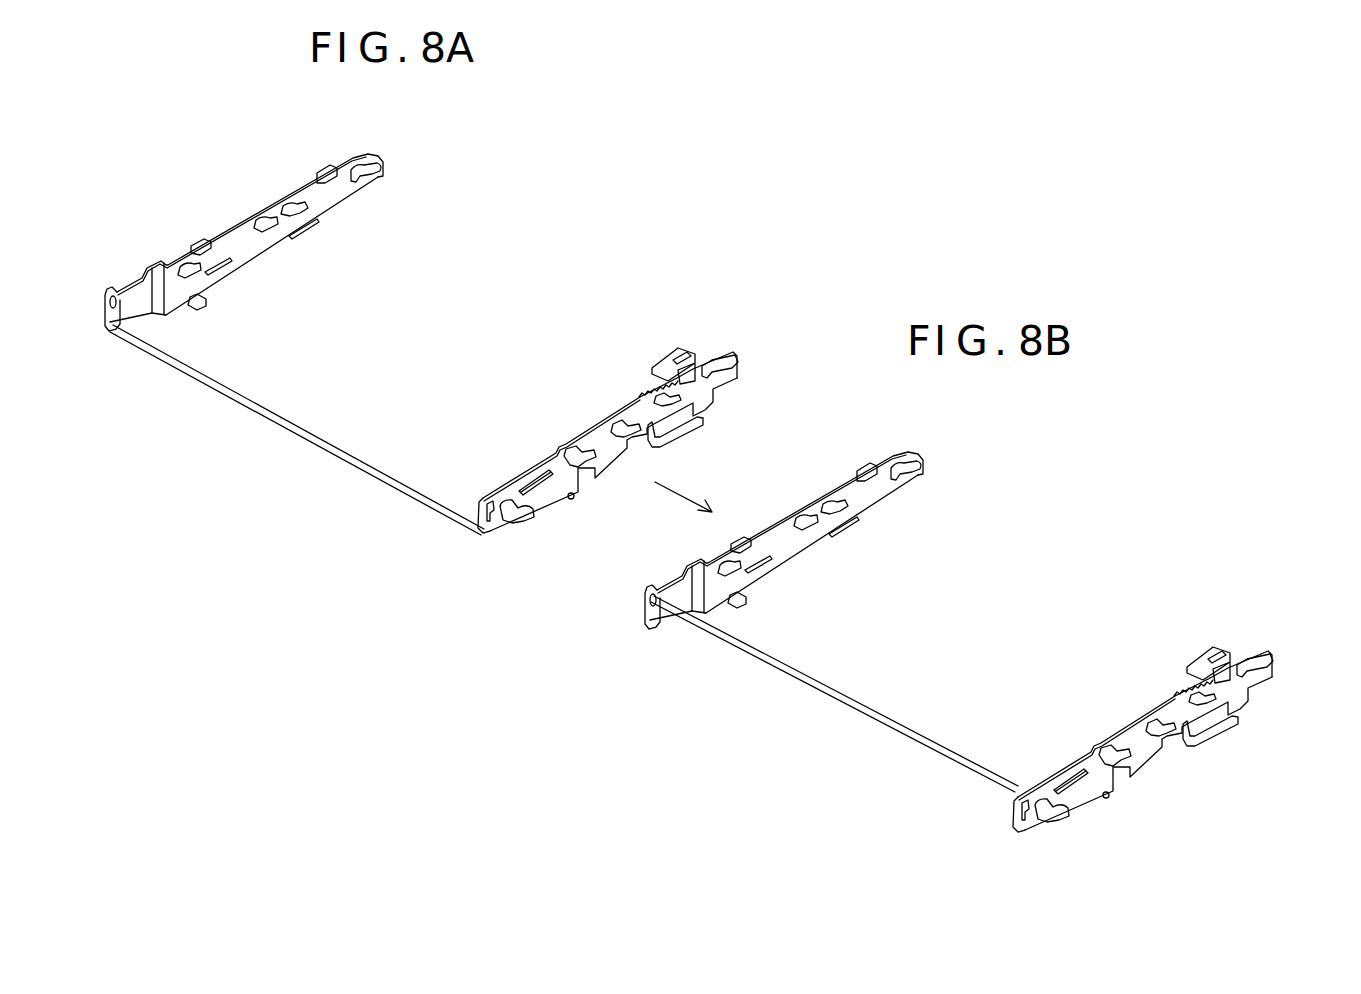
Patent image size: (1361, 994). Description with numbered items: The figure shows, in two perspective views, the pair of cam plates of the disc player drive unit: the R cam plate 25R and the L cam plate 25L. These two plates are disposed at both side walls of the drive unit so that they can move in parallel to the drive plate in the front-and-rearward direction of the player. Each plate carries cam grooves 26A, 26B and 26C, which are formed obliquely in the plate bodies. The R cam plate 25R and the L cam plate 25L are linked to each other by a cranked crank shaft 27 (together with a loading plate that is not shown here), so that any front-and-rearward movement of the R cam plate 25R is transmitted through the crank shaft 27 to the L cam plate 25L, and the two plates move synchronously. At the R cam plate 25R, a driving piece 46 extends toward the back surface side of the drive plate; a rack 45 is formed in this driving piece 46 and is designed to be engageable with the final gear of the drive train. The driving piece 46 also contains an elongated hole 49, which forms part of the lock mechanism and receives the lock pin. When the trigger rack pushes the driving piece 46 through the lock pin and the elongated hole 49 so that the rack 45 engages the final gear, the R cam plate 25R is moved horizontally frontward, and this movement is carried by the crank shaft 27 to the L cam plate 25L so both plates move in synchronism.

In FIG. 8A, the L cam plate 25L is at (252, 210).
In FIG. 8B, the L cam plate 25L is at (813, 496).
In FIG. 8A, the R cam plate 25R is at (605, 418).
In FIG. 8B, the R cam plate 25R is at (1065, 770).
In FIG. 8A, the cam groove 26A is at (517, 528).
In FIG. 8B, the cam groove 26A is at (1060, 816).
In FIG. 8A, the cam groove 26B is at (365, 178).
In FIG. 8B, the cam groove 26B is at (897, 478).
In FIG. 8A, the cam groove 26C is at (262, 232).
In FIG. 8B, the cam groove 26C is at (800, 530).
In FIG. 8A, the crank shaft 27 is at (307, 427).
In FIG. 8B, the crank shaft 27 is at (870, 707).
In FIG. 8A, the rack 45 is at (641, 388).
In FIG. 8B, the rack 45 is at (1190, 683).
In FIG. 8A, the driving piece 46 is at (660, 356).
In FIG. 8B, the driving piece 46 is at (1203, 653).
In FIG. 8A, the elongated hole 49 is at (700, 349).
In FIG. 8B, the elongated hole 49 is at (1226, 648).